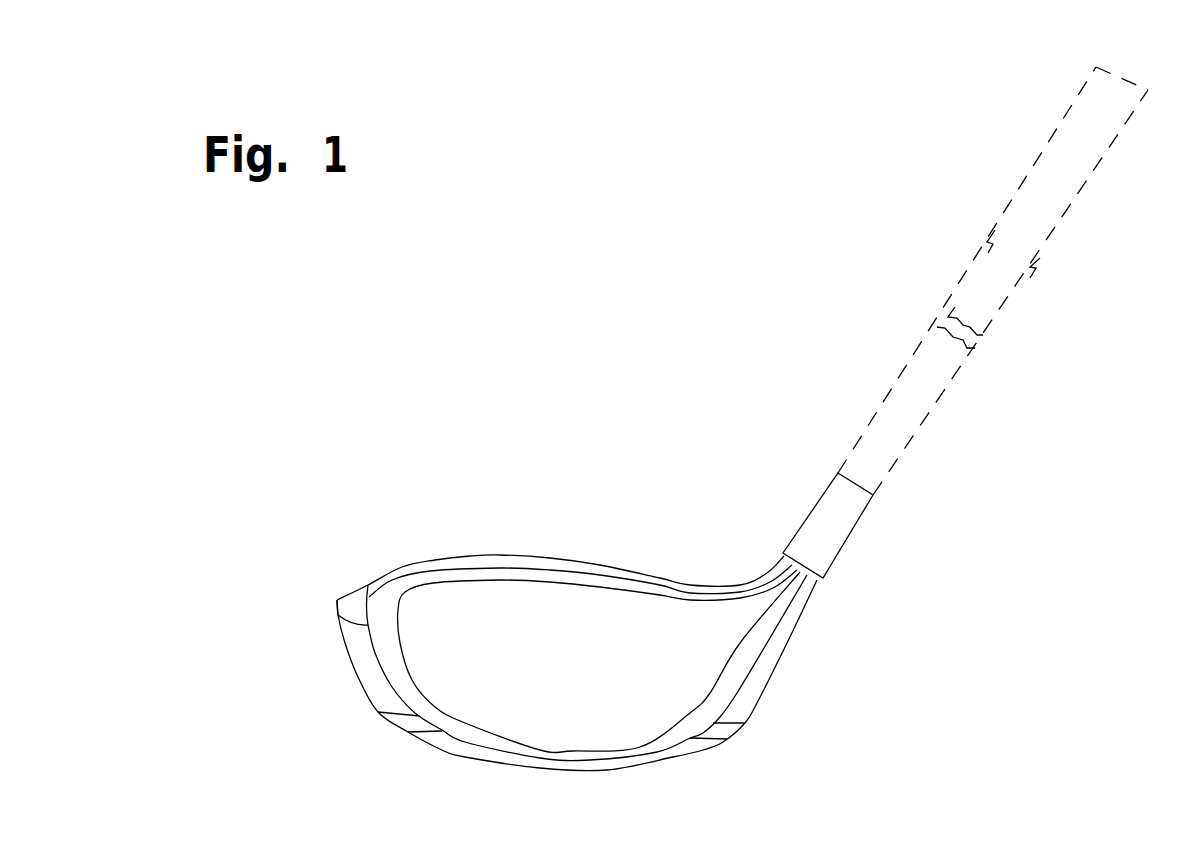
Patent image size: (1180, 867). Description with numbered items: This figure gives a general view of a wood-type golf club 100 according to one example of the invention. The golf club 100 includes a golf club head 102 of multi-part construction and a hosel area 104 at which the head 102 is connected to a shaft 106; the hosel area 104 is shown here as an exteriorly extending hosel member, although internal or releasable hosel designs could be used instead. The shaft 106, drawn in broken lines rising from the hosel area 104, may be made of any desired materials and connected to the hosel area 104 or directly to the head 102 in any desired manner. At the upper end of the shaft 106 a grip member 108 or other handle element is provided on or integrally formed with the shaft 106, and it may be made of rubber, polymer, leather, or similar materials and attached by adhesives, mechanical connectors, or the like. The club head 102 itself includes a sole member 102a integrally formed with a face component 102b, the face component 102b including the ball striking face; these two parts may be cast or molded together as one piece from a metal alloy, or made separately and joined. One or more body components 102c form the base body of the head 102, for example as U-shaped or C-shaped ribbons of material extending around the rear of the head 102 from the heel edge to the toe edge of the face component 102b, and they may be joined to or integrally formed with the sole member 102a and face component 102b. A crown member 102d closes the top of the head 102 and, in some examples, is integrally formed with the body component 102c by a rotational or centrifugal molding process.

The wood-type golf club 100 is at (849, 158).
The golf club head 102 is at (504, 502).
The sole member 102a is at (547, 768).
The face component 102b is at (588, 654).
The body component 102c is at (368, 652).
The crown member 102d is at (517, 563).
The hosel area 104 is at (828, 532).
The shaft 106 is at (933, 407).
The grip member 108 is at (1002, 218).